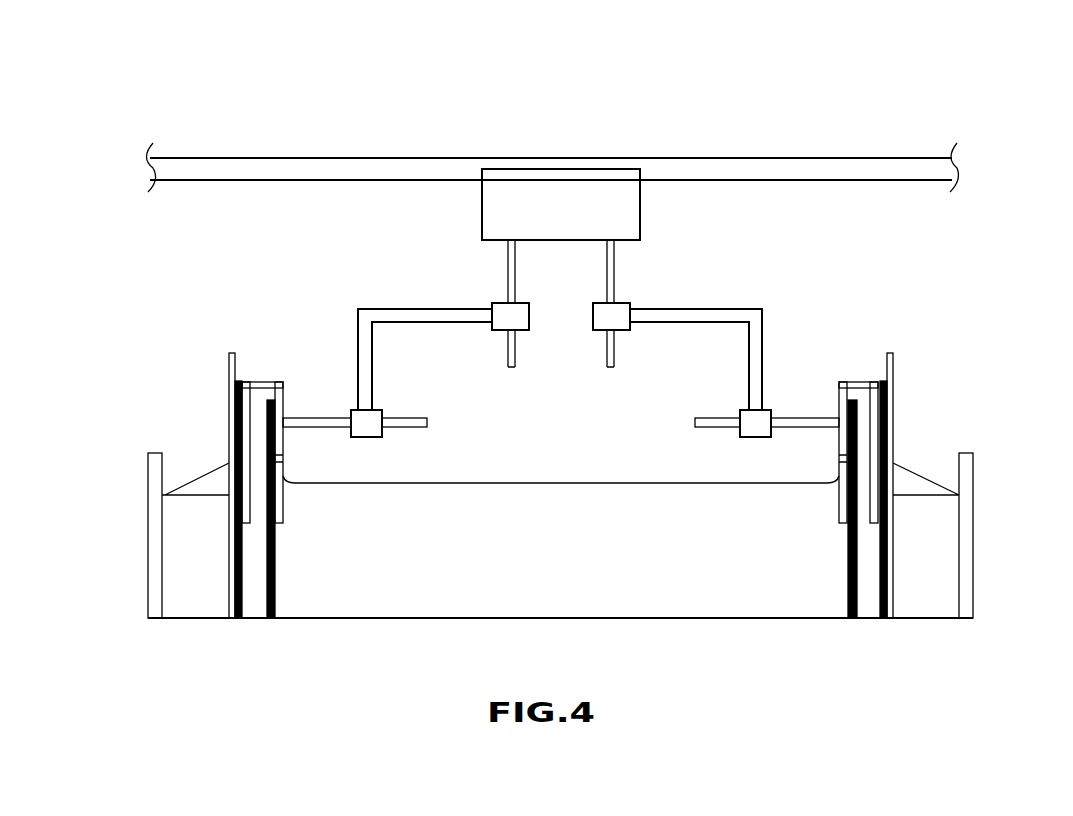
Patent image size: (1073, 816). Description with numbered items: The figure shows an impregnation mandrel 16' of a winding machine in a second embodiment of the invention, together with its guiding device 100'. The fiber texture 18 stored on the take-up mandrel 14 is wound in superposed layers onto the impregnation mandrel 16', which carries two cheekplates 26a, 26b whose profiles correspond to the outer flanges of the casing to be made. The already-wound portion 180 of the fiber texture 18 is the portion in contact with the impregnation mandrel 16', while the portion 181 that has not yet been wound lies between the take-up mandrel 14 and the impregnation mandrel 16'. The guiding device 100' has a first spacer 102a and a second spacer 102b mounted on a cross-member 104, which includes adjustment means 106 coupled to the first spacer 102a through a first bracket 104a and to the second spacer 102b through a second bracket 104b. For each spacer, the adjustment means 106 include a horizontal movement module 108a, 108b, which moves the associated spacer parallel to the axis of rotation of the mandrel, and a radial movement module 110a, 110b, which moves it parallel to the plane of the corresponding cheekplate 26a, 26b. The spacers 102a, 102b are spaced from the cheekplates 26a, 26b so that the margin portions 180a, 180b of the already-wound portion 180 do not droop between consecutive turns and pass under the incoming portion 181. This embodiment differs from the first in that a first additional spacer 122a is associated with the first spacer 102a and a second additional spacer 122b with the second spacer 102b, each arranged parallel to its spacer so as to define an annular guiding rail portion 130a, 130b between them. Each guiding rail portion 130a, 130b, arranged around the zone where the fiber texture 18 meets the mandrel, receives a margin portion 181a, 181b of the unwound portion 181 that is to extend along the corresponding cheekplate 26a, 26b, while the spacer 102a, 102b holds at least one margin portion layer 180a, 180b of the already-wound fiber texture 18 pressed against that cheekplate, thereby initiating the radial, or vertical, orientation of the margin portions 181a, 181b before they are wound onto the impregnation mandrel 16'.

The guiding device 100' is at (586, 85).
The adjustment means 106 is at (454, 212).
The cross-member 104 is at (333, 277).
The first bracket 104a is at (400, 319).
The second bracket 104b is at (722, 319).
The radial movement module 110a is at (502, 312).
The radial movement module 110b is at (620, 312).
The horizontal movement module 108a is at (378, 416).
The horizontal movement module 108b is at (744, 416).
The first additional spacer 122a is at (285, 406).
The second additional spacer 122b is at (838, 406).
The first spacer 102a is at (250, 410).
The second spacer 102b is at (868, 410).
The impregnation mandrel 16' is at (553, 253).
The take-up mandrel 14 is at (977, 599).
The fiber texture 18 is at (205, 480).
The portion of the fiber texture not already wound 181 is at (918, 469).
The already-wound portion of the fiber texture 180 is at (577, 583).
The margin portion 180a is at (239, 378).
The margin portion 180b is at (883, 378).
The cheekplate 26a is at (233, 413).
The cheekplate 26b is at (896, 360).
The guiding rail portion 130a is at (266, 450).
The guiding rail portion 130b is at (854, 450).
The margin portion 181a is at (285, 455).
The margin portion 181b is at (837, 455).